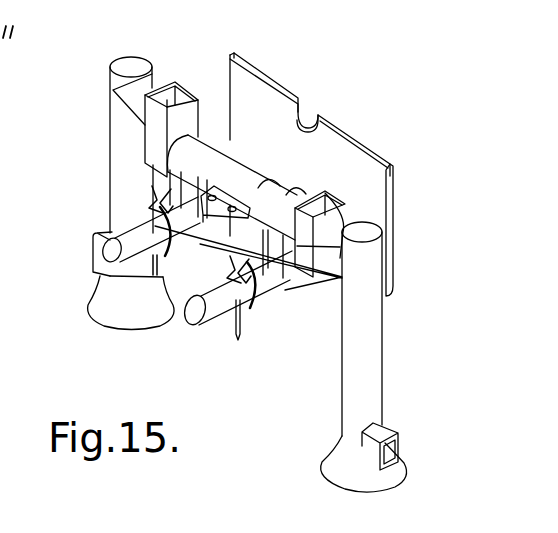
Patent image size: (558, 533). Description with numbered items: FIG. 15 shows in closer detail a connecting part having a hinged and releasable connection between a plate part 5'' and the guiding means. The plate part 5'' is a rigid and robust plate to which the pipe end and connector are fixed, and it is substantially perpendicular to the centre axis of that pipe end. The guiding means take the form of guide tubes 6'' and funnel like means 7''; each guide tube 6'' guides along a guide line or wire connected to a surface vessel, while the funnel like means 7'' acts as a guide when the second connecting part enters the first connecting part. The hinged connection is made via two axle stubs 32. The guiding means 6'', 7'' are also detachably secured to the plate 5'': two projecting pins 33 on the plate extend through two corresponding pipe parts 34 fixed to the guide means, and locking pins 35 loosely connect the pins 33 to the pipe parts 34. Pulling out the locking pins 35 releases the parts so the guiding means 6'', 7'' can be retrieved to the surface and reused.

The plate part 5'' is at (311, 161).
The guide tube 6'' is at (390, 357).
The funnel like means 7'' is at (87, 199).
The axle stub 32 is at (133, 100).
The projecting pin 33 is at (203, 328).
The pipe part 34 is at (287, 287).
The locking pin 35 is at (257, 268).